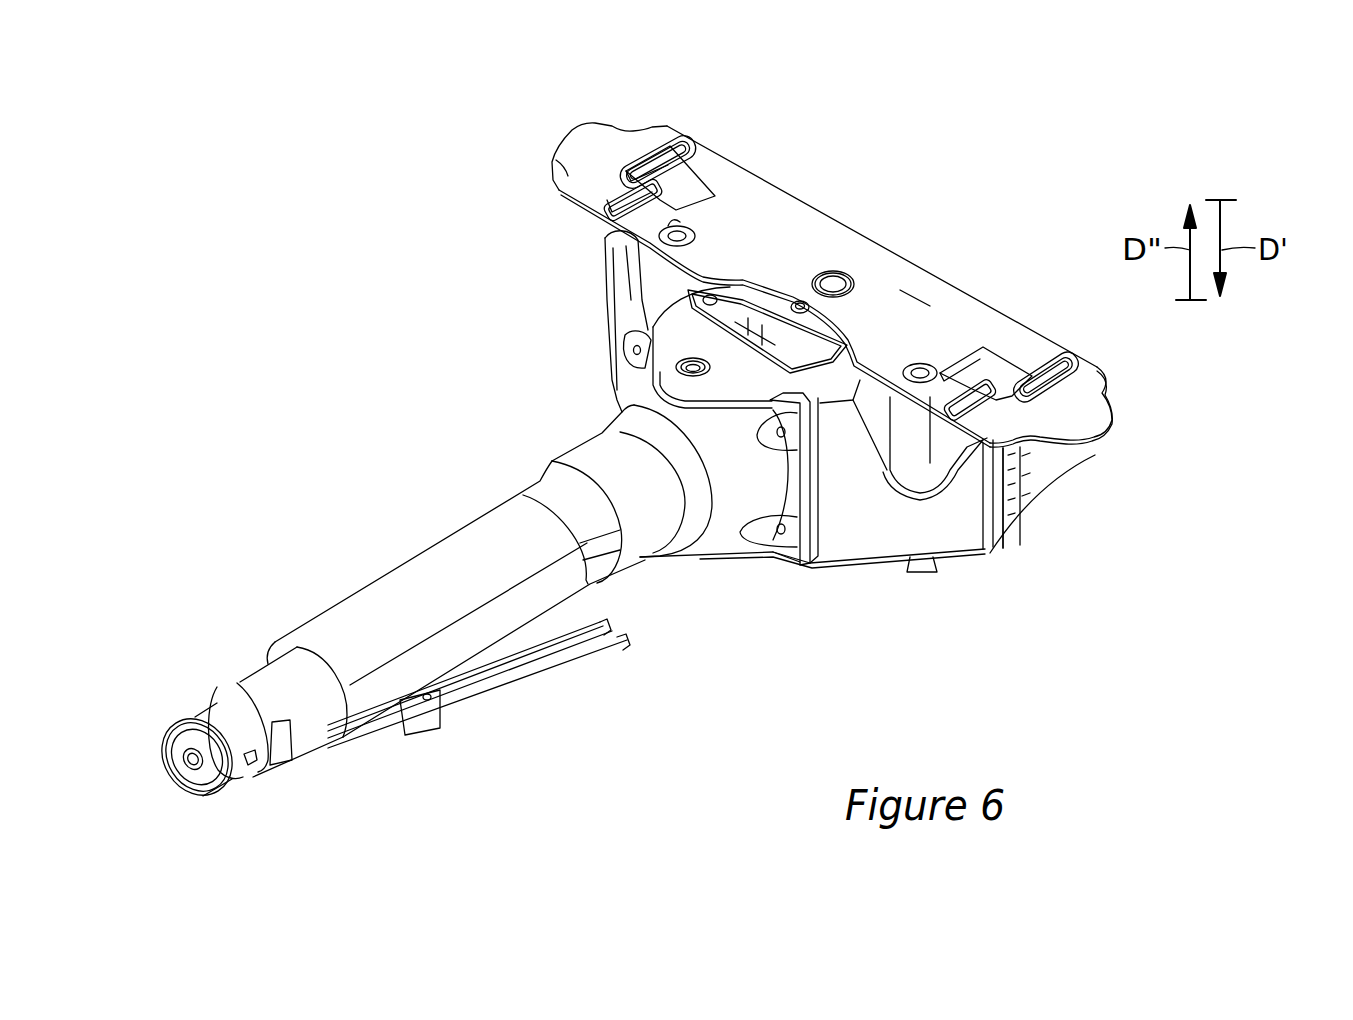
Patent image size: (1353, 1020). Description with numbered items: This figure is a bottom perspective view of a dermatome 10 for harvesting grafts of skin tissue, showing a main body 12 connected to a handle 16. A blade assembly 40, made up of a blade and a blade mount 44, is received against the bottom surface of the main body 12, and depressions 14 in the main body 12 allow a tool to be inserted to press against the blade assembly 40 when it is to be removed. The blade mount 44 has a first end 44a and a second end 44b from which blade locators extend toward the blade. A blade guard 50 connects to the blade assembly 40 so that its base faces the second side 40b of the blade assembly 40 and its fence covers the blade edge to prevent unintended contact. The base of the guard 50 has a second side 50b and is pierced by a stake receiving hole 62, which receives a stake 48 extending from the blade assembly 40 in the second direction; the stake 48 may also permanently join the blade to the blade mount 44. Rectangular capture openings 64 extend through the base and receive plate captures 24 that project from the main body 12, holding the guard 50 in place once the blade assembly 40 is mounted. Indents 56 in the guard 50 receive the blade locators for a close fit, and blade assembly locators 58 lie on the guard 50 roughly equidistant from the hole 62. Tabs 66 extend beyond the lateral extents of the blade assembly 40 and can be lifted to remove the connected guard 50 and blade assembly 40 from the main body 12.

The dermatome 10 is at (335, 195).
The main body 12 is at (933, 557).
The depressions 14 is at (633, 258).
The handle 16 is at (403, 567).
The plate capture 24 is at (676, 148).
The blade assembly 40 is at (827, 337).
The second side of blade assembly 40b is at (913, 300).
The blade mount 44 is at (698, 282).
The first end of blade mount 44a is at (627, 217).
The second end of blade mount 44b is at (1013, 535).
The stake 48 is at (826, 277).
The blade guard 50 is at (953, 300).
The second side of base 50b is at (958, 336).
The indents 56 is at (714, 197).
The blade assembly locators 58 is at (695, 234).
The stake receiving hole 62 is at (852, 272).
The capture openings 64 is at (682, 152).
The tabs 66 is at (574, 140).